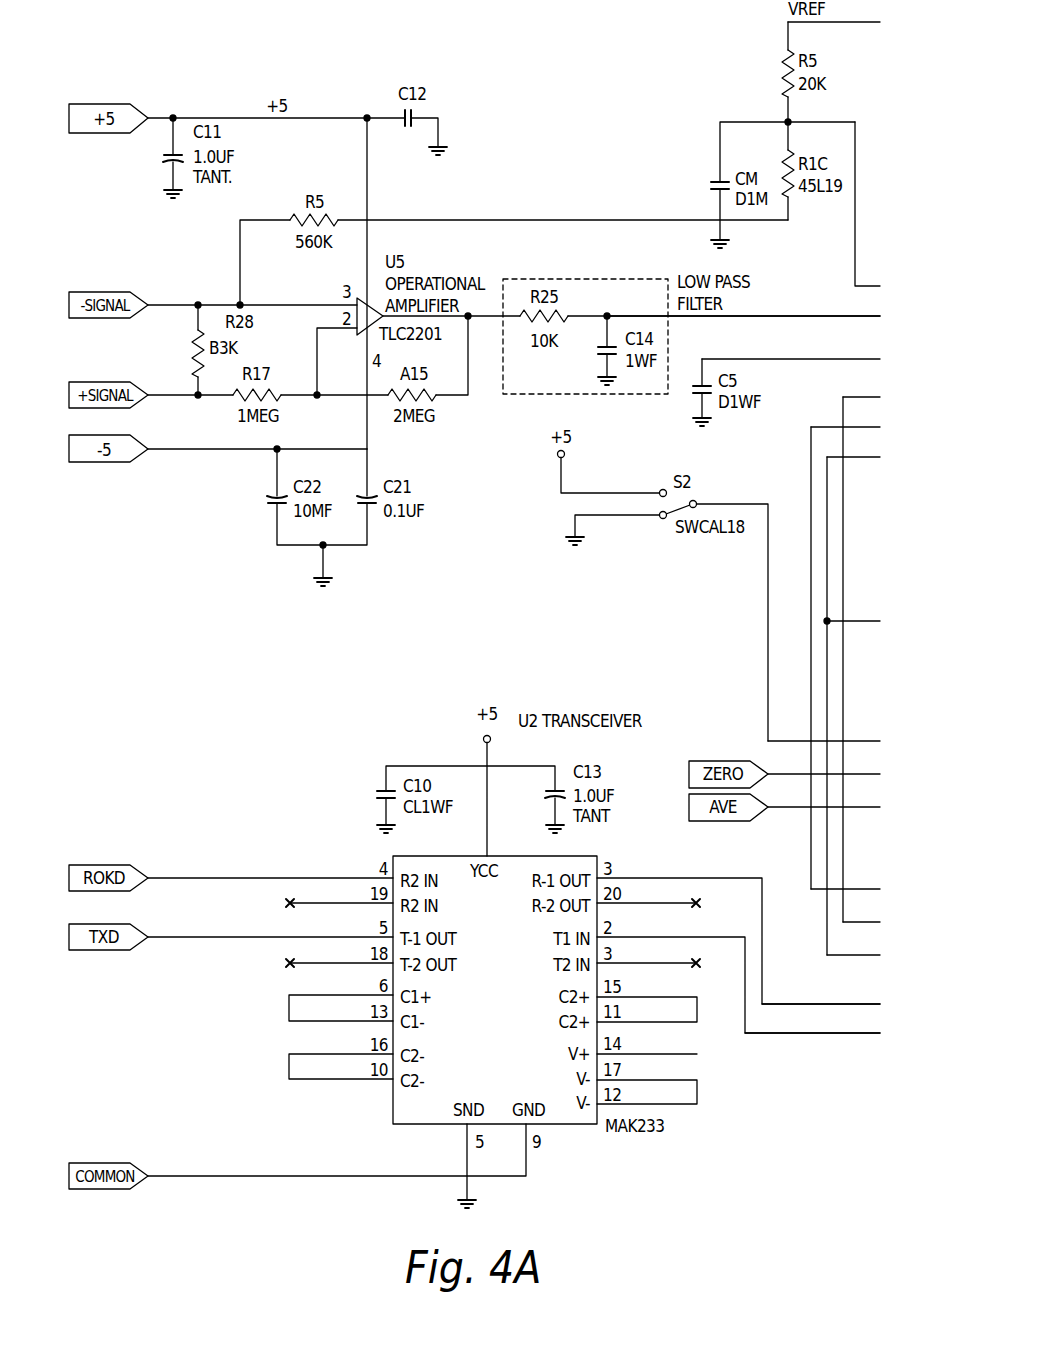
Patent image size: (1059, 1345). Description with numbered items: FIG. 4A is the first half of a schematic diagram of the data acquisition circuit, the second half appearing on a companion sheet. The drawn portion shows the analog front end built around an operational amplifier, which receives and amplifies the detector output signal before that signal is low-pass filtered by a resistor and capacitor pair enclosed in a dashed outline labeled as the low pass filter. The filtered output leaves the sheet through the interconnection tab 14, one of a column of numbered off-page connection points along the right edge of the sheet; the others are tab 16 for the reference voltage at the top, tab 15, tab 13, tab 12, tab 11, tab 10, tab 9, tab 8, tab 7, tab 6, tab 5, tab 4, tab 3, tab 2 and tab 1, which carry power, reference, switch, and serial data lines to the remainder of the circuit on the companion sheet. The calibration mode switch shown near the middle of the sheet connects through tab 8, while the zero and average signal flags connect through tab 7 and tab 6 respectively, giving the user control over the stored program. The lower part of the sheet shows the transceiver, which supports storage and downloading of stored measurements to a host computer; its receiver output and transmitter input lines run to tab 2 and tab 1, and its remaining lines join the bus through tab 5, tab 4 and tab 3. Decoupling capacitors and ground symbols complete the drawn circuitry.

The connector pin 1 (T1 IN) 1 is at (821, 1034).
The connector pin 2 (R-1 OUT) 2 is at (829, 1005).
The connector pin 3 is at (862, 956).
The connector pin 4 is at (870, 923).
The connector pin 5 is at (854, 890).
The connector pin 6 (AVE) 6 is at (832, 808).
The connector pin 7 (ZERO) 7 is at (832, 775).
The connector pin 8 (switch S2) 8 is at (832, 742).
The connector pin 9 is at (862, 622).
The connector pin 10 is at (866, 458).
The connector pin 11 is at (858, 428).
The connector pin 12 is at (874, 398).
The connector pin 13 (C5) 13 is at (804, 360).
The connector pin 14 (low pass filter output) 14 is at (756, 317).
The connector pin 15 is at (880, 209).
The connector pin 16 (VREF) 16 is at (847, 23).